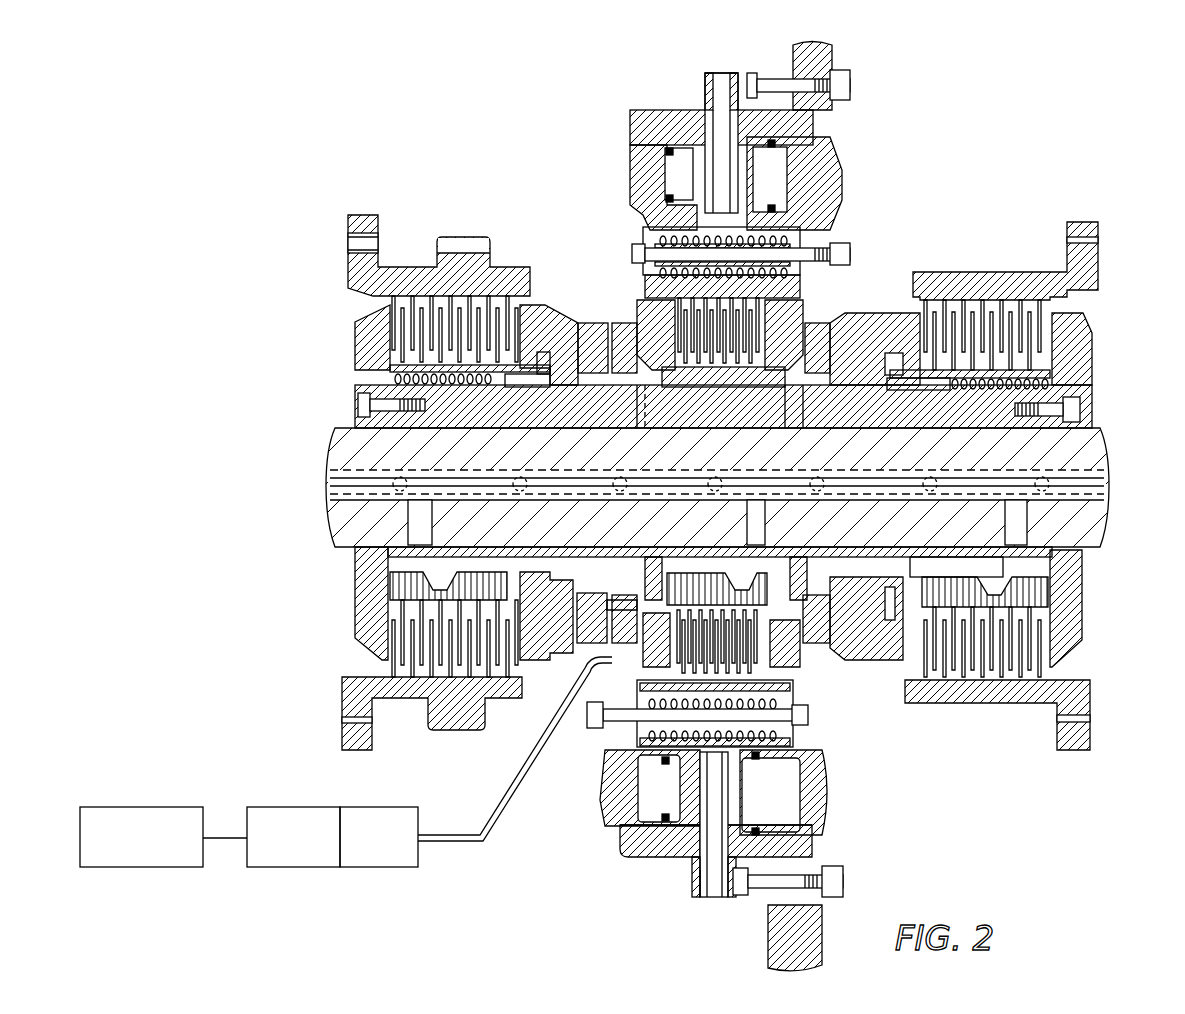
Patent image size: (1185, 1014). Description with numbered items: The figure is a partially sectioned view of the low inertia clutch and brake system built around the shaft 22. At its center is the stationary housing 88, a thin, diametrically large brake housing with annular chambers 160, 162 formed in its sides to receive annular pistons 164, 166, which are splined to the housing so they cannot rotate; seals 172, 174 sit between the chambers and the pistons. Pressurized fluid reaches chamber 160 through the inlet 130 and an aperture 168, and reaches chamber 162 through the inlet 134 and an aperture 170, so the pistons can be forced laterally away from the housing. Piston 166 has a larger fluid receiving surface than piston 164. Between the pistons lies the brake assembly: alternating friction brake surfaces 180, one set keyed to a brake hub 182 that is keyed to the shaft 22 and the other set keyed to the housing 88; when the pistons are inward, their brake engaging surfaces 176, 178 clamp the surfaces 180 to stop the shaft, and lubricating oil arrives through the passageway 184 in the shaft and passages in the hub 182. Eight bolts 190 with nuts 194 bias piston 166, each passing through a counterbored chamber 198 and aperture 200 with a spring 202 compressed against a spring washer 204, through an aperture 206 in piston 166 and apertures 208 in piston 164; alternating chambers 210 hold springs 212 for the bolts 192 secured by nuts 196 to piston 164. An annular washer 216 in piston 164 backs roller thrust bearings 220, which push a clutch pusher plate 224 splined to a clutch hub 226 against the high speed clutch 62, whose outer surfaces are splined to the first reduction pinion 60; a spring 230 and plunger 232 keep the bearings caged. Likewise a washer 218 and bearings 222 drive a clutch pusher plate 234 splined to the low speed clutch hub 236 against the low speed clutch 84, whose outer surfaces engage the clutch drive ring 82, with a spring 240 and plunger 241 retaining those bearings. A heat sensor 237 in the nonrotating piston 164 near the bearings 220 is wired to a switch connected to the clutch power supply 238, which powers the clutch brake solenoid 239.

The shaft 22 is at (902, 461).
The first reduction pinion 60 is at (456, 250).
The high speed clutch 62 is at (420, 325).
The clutch drive ring 82 is at (980, 276).
The low speed clutch 84 is at (1000, 332).
The stationary housing 88 is at (668, 848).
The inlet 130 is at (725, 928).
The inlet 134 is at (726, 75).
The annular chamber 160 is at (622, 840).
The annular chamber 162 is at (790, 842).
The annular piston 164 is at (645, 788).
The annular piston 166 is at (785, 782).
The aperture 168 is at (704, 895).
The aperture 170 is at (716, 90).
The seal 172 is at (645, 818).
The seal 174 is at (780, 823).
The brake engaging surface 176 is at (672, 641).
The brake engaging surface 178 is at (790, 682).
The friction brake surfaces 180 is at (722, 332).
The brake hub 182 is at (730, 408).
The passageway 184 is at (1090, 485).
The bolts 190 is at (645, 280).
The bolts 192 is at (812, 715).
The nuts 194 is at (848, 254).
The nuts 196 is at (600, 728).
The circular chambers 198 is at (650, 218).
The aperture 200 is at (790, 235).
The spring 202 is at (650, 213).
The spring washer 204 is at (655, 232).
The aperture 206 is at (795, 247).
The apertures 208 is at (648, 268).
The chambers 210 is at (645, 752).
The spring 212 is at (815, 740).
The annular washer 216 is at (660, 556).
The annular washer 218 is at (805, 642).
The roller thrust bearings 220 is at (592, 335).
The roller thrust bearings 222 is at (818, 337).
The clutch pusher plate 224 is at (628, 336).
The clutch hub 226 is at (606, 565).
The spring 230 is at (490, 383).
The plunger 232 is at (524, 385).
The clutch pusher plate 234 is at (870, 320).
The low speed clutch hub 236 is at (974, 576).
The heat sensor 237 is at (592, 662).
The clutch power supply 238 is at (330, 862).
The clutch brake solenoid 239 is at (188, 862).
The spring 240 is at (966, 385).
The plunger 241 is at (908, 388).